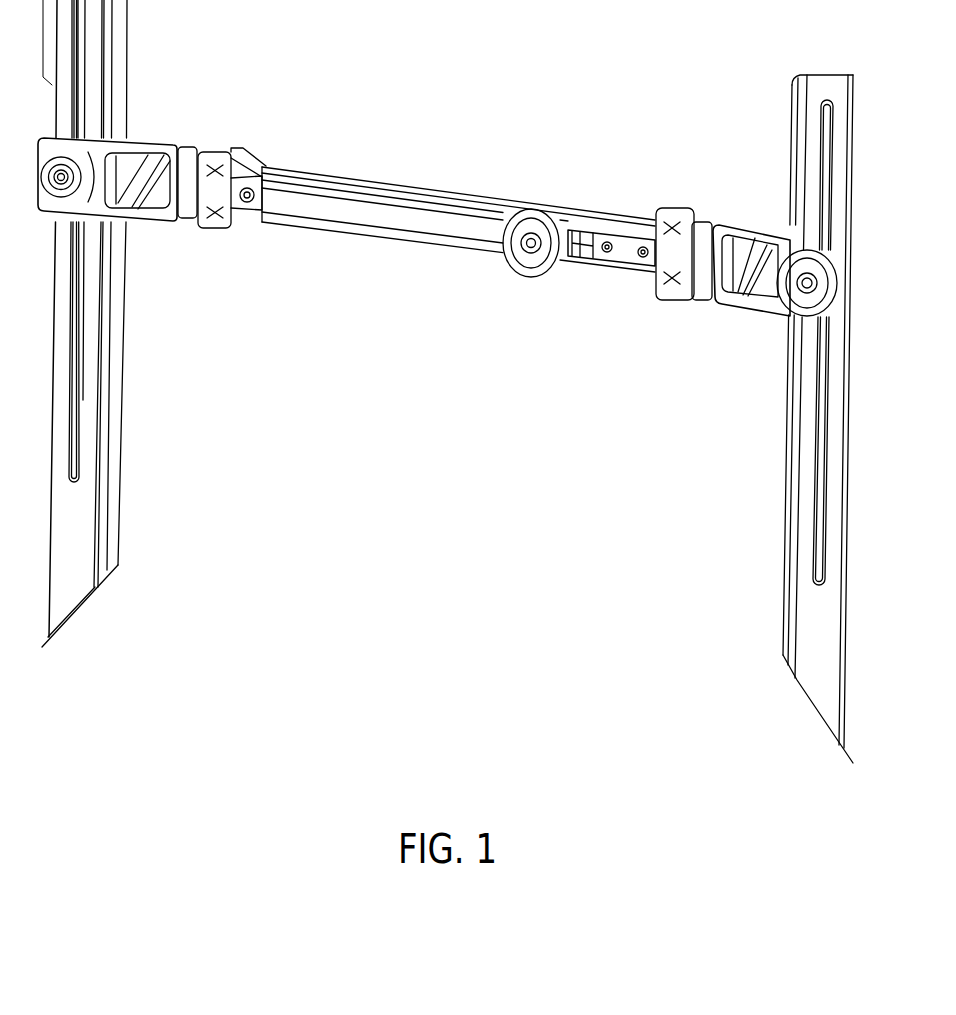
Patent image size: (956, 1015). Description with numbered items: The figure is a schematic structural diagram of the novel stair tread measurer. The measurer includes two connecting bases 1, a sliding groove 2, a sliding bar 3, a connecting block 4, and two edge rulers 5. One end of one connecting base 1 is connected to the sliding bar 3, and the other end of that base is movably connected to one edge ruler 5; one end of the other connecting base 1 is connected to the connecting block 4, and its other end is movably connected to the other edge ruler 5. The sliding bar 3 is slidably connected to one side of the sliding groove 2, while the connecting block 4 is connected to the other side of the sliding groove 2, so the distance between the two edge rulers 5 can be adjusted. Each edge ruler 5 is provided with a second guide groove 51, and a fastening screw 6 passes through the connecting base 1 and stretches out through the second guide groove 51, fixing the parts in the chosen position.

The connecting base 1 is at (165, 228).
The sliding groove 2 is at (446, 225).
The sliding bar 3 is at (374, 216).
The connecting block 4 is at (613, 213).
The edge ruler 5 is at (800, 612).
The second guide groove 51 is at (77, 445).
The fastening screw 6 is at (552, 280).